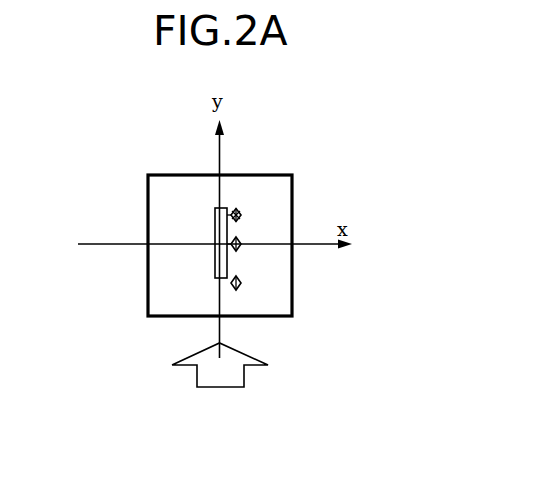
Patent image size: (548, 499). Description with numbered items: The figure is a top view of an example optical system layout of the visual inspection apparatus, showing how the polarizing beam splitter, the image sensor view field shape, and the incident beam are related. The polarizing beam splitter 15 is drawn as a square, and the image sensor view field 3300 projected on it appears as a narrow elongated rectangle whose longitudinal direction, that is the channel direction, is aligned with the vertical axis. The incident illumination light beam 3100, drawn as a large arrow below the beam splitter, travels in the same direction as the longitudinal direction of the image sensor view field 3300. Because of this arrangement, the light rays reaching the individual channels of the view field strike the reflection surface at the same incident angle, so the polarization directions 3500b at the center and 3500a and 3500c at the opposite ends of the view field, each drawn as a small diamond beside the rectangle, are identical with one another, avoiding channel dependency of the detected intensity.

The polarizing beam splitter 15 is at (142, 175).
The image sensor view field 3300 is at (201, 272).
The incident illumination light beam 3100 is at (220, 383).
The polarization direction 3500a is at (243, 204).
The polarization direction 3500b is at (243, 252).
The polarization direction 3500c is at (238, 288).